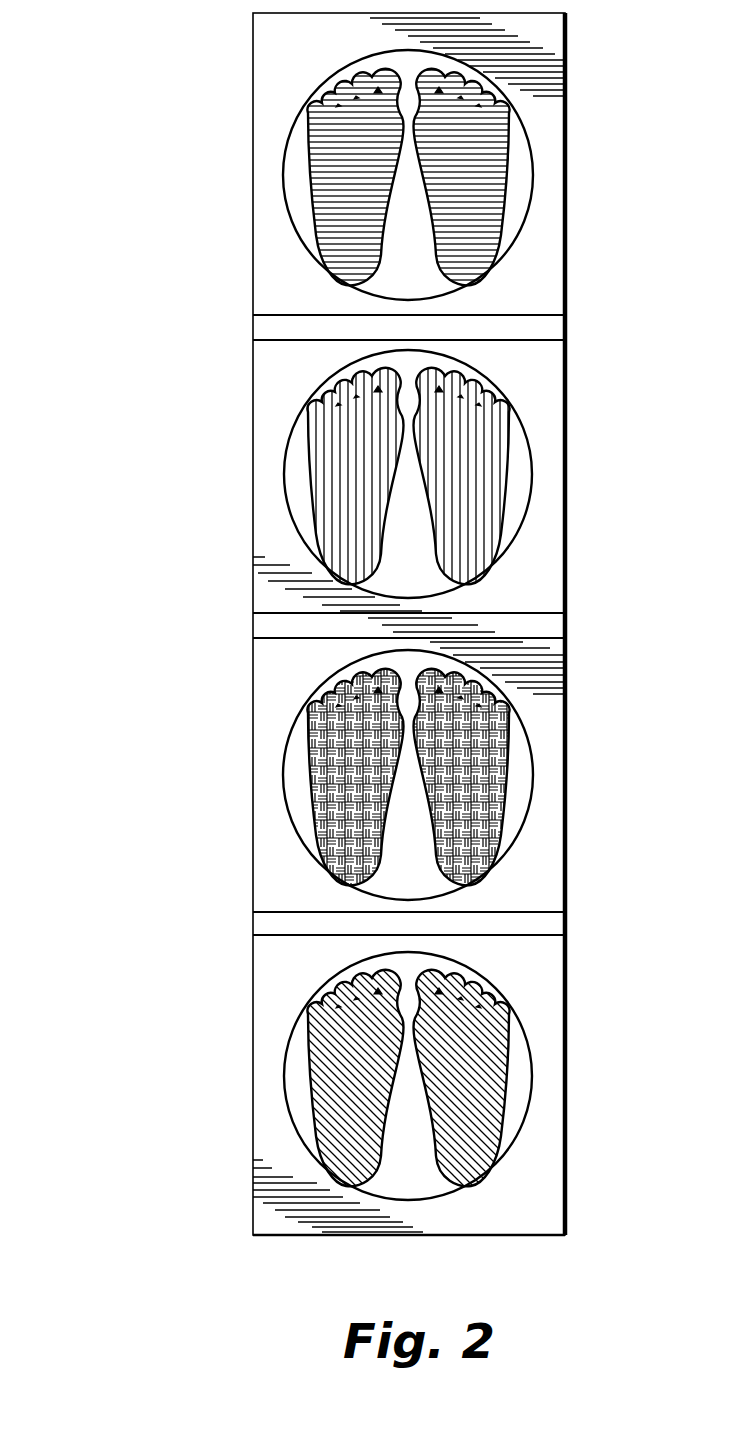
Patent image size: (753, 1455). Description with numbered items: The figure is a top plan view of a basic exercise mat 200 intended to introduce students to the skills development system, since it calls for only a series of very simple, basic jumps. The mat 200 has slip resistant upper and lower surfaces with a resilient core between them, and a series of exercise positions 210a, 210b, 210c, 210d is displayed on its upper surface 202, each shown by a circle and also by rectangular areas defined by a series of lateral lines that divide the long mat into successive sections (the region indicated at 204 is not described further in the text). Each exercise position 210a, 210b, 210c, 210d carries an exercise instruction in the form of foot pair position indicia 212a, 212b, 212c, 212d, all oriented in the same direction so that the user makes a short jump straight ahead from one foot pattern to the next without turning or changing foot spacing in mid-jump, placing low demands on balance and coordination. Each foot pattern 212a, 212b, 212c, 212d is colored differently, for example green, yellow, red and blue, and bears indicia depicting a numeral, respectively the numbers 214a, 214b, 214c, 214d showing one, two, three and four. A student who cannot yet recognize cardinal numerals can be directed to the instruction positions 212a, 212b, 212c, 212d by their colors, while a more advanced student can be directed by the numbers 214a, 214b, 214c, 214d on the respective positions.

The exercise mat 200 is at (172, 963).
The upper surface 202 is at (276, 659).
The fold line 204 is at (276, 872).
The exercise position 210a is at (283, 1078).
The exercise position 210b is at (283, 775).
The exercise position 210c is at (283, 476).
The exercise position 210d is at (283, 176).
The foot pair position indicia 212a is at (492, 1053).
The foot pair position indicia 212b is at (497, 768).
The foot pair position indicia 212c is at (503, 462).
The foot pair position indicia 212d is at (497, 161).
The numeral indicia 214a is at (413, 1103).
The numeral indicia 214b is at (418, 818).
The numeral indicia 214c is at (430, 510).
The numeral indicia 214d is at (418, 207).